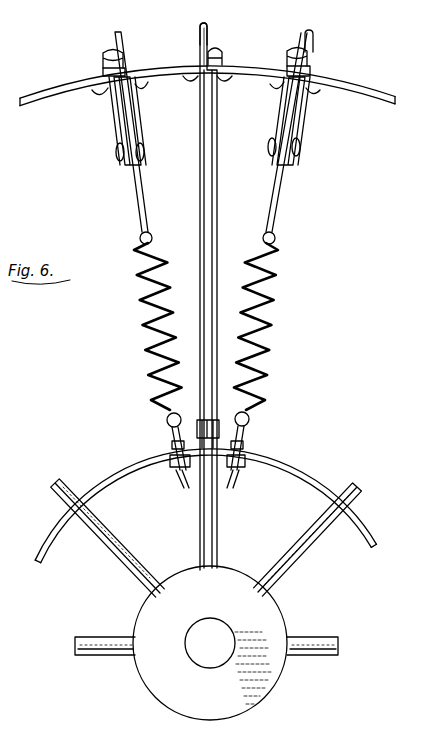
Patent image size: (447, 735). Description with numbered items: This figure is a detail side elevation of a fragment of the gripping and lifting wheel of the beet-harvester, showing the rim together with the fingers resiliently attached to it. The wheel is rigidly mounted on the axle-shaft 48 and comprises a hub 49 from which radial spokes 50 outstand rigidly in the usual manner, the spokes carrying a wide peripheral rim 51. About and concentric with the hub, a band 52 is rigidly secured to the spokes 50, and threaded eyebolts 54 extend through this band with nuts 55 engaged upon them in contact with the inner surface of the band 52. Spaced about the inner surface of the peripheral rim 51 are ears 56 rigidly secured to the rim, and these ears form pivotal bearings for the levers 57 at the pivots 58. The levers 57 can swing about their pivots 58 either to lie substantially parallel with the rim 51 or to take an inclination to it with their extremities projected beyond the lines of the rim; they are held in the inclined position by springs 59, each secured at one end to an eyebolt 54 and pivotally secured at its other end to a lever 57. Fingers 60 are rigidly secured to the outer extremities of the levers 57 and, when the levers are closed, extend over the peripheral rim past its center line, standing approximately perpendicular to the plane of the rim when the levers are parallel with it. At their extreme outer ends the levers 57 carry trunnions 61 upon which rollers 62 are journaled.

The axle-shaft 48 is at (195, 650).
The hub 49 is at (268, 670).
The spokes 50 is at (215, 528).
The peripheral rim 51 is at (345, 90).
The band 52 is at (303, 477).
The threaded eyebolts 54 is at (247, 430).
The nuts 55 is at (238, 464).
The ears 56 is at (132, 128).
The levers 57 is at (136, 200).
The pivots 58 is at (297, 152).
The springs 59 is at (150, 331).
The fingers 60 is at (208, 30).
The trunnions 61 is at (110, 53).
The rollers 62 is at (126, 68).